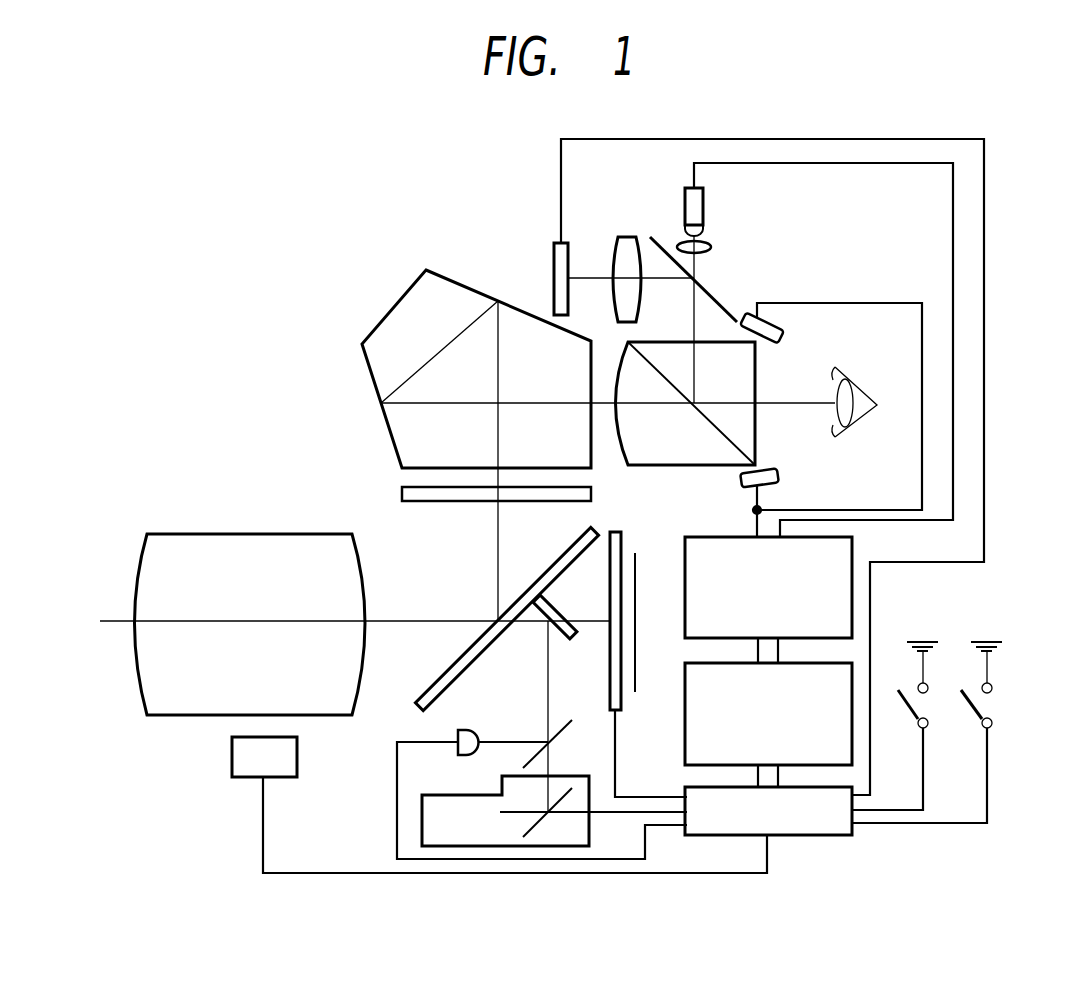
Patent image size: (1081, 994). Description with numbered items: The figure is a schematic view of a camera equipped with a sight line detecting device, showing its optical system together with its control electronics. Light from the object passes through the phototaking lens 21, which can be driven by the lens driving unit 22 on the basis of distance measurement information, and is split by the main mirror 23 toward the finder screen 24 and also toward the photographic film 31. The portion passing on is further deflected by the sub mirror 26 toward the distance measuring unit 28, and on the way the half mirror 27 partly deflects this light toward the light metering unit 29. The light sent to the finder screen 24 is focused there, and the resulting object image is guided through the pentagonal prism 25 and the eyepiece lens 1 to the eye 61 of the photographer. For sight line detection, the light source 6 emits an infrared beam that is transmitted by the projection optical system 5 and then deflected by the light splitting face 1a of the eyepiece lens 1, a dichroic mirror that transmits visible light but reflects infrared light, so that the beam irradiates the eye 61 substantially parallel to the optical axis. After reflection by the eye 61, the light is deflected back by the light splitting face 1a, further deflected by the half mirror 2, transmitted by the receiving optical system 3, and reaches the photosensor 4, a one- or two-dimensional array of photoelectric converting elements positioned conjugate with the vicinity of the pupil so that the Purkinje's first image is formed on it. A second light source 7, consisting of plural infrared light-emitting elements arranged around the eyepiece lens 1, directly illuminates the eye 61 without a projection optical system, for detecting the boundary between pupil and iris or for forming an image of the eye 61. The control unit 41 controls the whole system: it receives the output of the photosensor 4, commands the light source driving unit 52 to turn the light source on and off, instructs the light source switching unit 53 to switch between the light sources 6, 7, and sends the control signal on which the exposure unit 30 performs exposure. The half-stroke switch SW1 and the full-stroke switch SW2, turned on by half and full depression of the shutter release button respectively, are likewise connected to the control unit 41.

The eyepiece lens 1 is at (686, 435).
The light splitting face 1a is at (691, 424).
The half mirror 2 is at (709, 279).
The receiving optical system 3 is at (625, 255).
The photosensor 4 is at (538, 264).
The projection optical system 5 is at (713, 229).
The light source 6 is at (677, 190).
The light source 7 is at (772, 422).
The phototaking lens 21 is at (248, 662).
The lens driving unit 22 is at (253, 786).
The main mirror 23 is at (478, 633).
The finder screen 24 is at (458, 504).
The pentagonal prism 25 is at (445, 369).
The sub mirror 26 is at (566, 645).
The half mirror 27 is at (568, 748).
The distance measuring unit 28 is at (505, 848).
The light metering unit 29 is at (491, 726).
The exposure unit 30 is at (646, 630).
The photographic film 31 is at (658, 611).
The control unit 41 is at (790, 829).
The light source driving unit 52 is at (742, 727).
The light source switching unit 53 is at (747, 602).
The eye 61 is at (867, 424).
The half-stroke switch SW1 is at (940, 705).
The full-stroke switch SW2 is at (1013, 685).